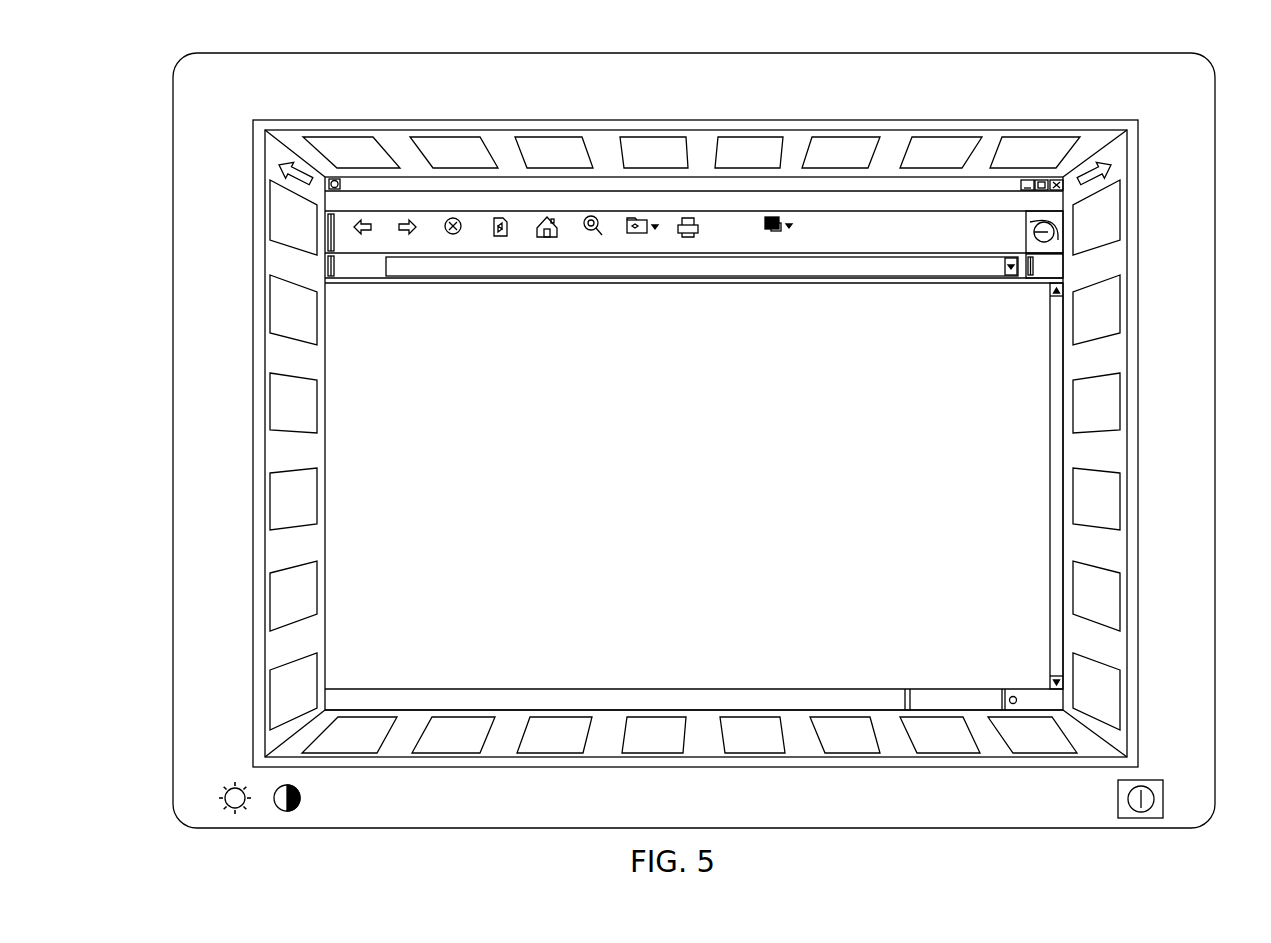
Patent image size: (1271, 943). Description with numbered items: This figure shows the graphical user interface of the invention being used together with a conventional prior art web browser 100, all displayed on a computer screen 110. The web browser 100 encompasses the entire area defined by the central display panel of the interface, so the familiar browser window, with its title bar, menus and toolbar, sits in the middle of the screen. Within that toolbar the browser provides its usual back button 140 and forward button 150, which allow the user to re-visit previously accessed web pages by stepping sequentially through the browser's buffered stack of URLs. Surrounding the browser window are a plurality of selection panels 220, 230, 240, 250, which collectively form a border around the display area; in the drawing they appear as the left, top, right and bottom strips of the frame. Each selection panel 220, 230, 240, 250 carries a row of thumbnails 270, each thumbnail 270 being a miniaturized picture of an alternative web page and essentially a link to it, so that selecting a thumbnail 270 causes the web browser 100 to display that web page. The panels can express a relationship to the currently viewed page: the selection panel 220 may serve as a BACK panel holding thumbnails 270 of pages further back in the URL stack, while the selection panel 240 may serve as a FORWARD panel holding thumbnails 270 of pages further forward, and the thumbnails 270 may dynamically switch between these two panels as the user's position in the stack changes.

The web browser 100 is at (448, 652).
The computer screen 110 is at (185, 512).
The back button 140 is at (357, 228).
The forward button 150 is at (412, 225).
The selection panel 220 is at (272, 738).
The selection panel 230 is at (1097, 138).
The selection panel 240 is at (1117, 738).
The selection panel 250 is at (1088, 752).
The thumbnail 270 is at (425, 140).